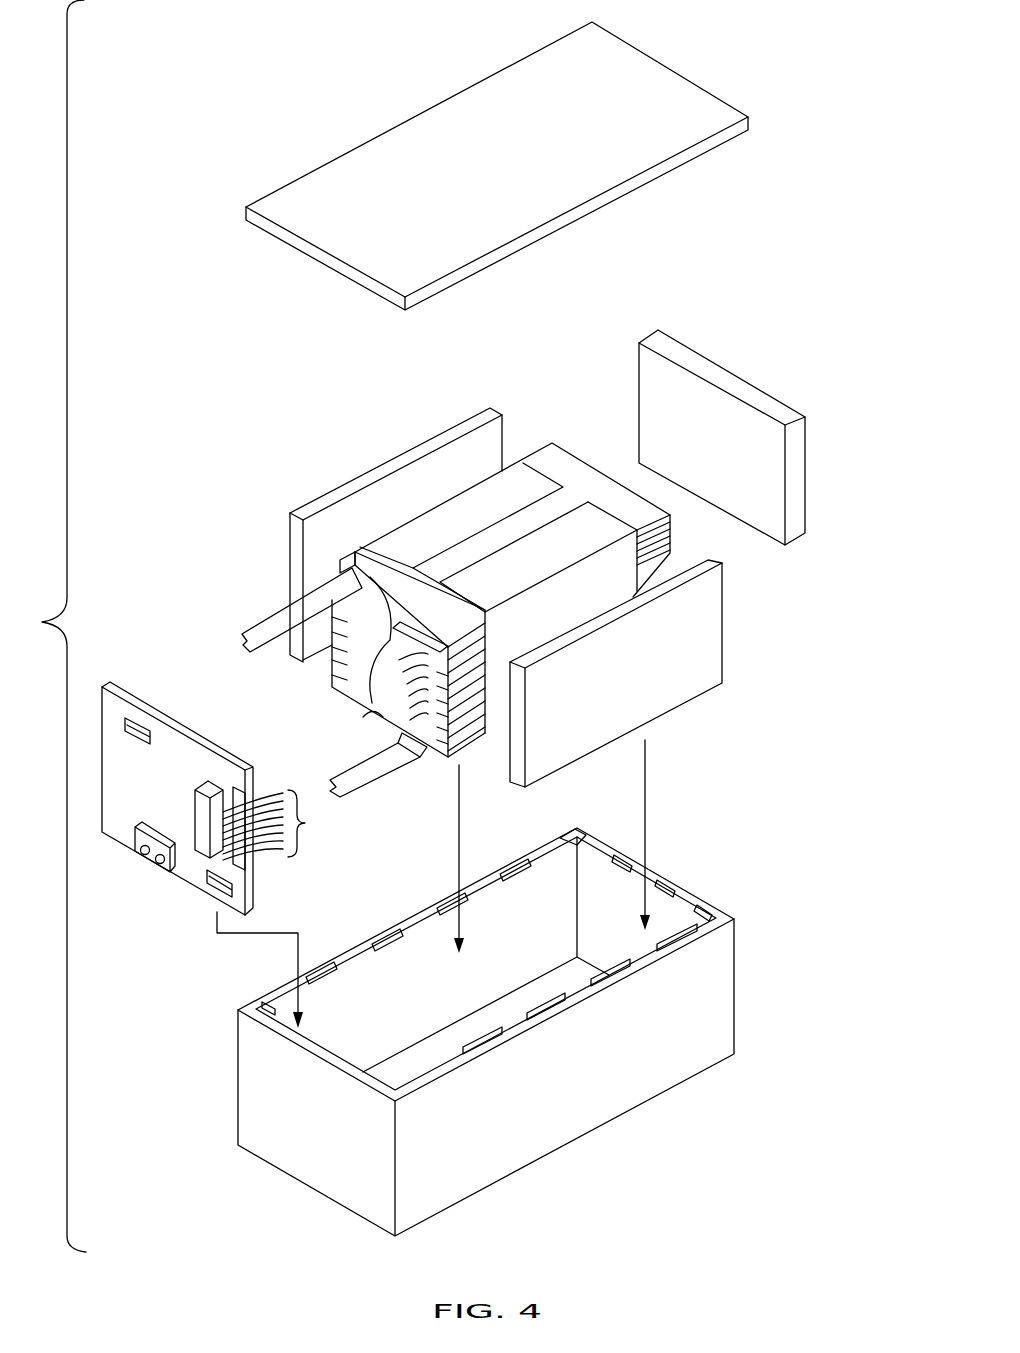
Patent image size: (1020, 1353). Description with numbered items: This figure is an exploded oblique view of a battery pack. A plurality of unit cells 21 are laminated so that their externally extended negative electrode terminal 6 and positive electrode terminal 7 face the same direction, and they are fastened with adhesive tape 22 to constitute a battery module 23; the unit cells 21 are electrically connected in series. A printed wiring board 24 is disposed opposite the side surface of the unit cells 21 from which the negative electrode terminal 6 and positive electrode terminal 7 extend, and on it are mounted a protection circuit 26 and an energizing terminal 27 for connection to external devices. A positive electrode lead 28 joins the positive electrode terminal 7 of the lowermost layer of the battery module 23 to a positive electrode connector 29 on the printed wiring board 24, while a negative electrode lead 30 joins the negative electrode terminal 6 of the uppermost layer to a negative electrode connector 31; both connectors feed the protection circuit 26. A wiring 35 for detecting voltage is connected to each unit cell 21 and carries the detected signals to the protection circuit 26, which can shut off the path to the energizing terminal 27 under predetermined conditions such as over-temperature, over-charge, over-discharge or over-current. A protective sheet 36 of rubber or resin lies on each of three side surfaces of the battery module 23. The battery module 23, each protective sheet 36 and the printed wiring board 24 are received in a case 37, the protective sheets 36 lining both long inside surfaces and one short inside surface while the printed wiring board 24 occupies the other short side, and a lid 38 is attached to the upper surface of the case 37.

The negative electrode terminal 6 is at (352, 574).
The positive electrode terminal 7 is at (420, 638).
The unit cells 21 is at (668, 524).
The adhesive tape 22 is at (578, 530).
The battery module 23 is at (438, 498).
The printed wiring board 24 is at (134, 686).
The protection circuit 26 is at (210, 790).
The energizing terminal 27 is at (158, 872).
The positive electrode lead 28 is at (372, 788).
The positive electrode connector 29 is at (240, 890).
The negative electrode lead 30 is at (248, 628).
The negative electrode connector 31 is at (148, 727).
The wiring for detecting voltage 35 is at (352, 690).
The protective sheet 36 is at (358, 488).
The case 37 is at (735, 988).
The lid 38 is at (688, 100).